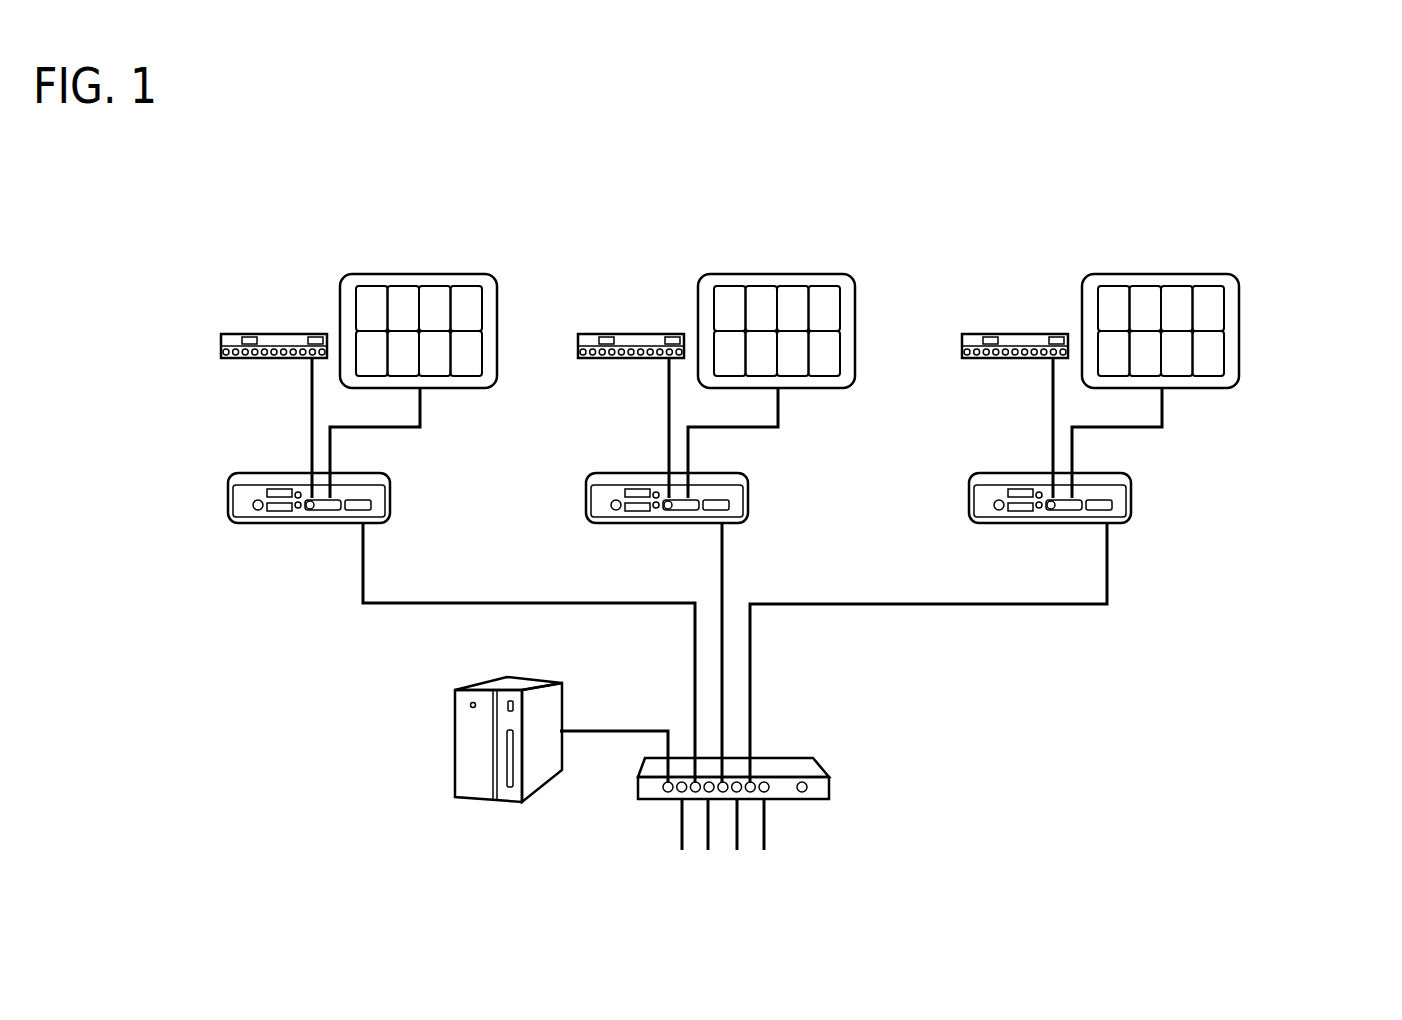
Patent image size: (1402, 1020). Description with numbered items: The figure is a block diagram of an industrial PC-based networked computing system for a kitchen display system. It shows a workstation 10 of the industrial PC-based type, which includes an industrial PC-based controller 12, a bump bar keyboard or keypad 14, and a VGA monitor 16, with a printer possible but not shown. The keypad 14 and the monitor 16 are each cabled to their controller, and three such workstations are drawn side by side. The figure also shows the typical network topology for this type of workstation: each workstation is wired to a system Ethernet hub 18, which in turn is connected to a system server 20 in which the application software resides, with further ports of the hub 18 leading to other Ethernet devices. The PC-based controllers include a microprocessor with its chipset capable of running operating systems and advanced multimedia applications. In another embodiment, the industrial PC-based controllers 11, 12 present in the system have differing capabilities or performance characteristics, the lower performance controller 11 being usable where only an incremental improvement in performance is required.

The workstation 10 is at (1302, 190).
The industrial PC-based controller 11 is at (264, 476).
The industrial PC-based controller 12 is at (617, 476).
The bump bar keyboard or keypad 14 is at (273, 333).
The VGA monitor 16 is at (410, 279).
The system Ethernet hub 18 is at (797, 768).
The system server 20 is at (477, 747).